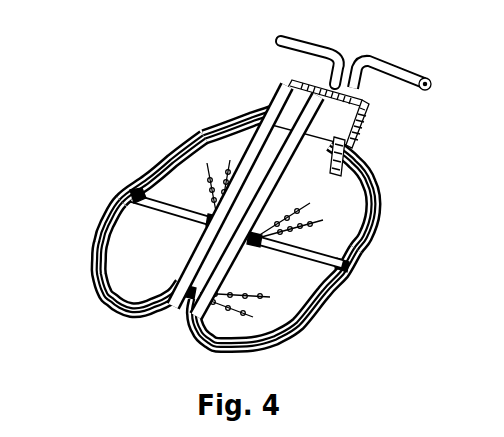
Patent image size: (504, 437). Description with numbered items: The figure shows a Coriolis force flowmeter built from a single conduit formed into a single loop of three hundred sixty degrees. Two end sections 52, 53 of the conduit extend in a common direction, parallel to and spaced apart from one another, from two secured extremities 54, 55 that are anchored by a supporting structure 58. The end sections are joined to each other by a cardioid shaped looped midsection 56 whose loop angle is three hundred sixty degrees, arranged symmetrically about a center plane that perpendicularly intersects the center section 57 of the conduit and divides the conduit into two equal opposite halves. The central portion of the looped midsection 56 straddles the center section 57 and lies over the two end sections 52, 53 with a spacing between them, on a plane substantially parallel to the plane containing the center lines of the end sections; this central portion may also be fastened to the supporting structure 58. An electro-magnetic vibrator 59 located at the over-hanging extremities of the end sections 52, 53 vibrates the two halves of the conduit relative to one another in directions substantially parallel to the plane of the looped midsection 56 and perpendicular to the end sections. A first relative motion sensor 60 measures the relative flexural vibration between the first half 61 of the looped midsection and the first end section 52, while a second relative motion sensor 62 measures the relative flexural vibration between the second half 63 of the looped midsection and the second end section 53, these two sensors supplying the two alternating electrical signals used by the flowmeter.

The first end section 52 is at (207, 127).
The second end section 53 is at (222, 140).
The first secured extremity 54 is at (293, 82).
The second secured extremity 55 is at (370, 118).
The looped midsection 56 is at (92, 225).
The center section 57 is at (287, 102).
The supporting structure 58 is at (367, 120).
The electro-magnetic vibrator 59 is at (190, 303).
The first relative motion sensor 60 is at (208, 234).
The first half of the looped midsection 61 is at (147, 170).
The second relative motion sensor 62 is at (255, 248).
The second half of the looped midsection 63 is at (365, 252).